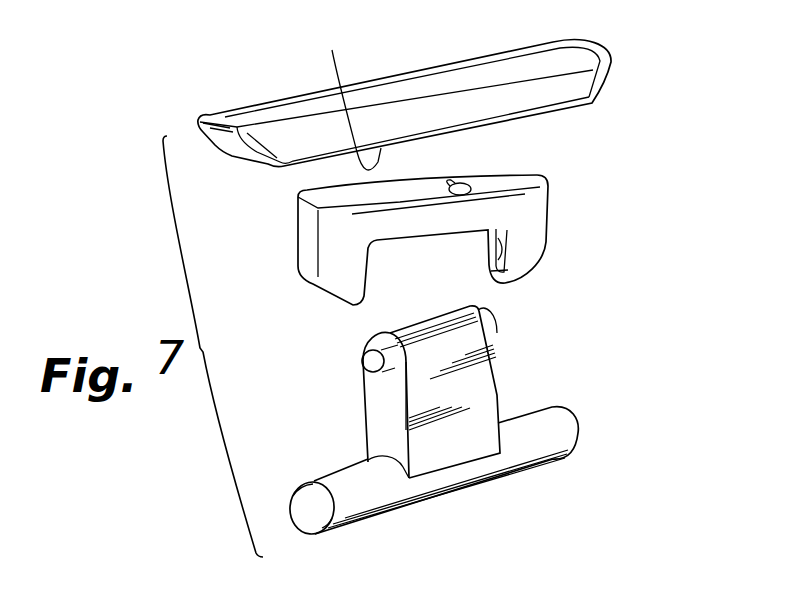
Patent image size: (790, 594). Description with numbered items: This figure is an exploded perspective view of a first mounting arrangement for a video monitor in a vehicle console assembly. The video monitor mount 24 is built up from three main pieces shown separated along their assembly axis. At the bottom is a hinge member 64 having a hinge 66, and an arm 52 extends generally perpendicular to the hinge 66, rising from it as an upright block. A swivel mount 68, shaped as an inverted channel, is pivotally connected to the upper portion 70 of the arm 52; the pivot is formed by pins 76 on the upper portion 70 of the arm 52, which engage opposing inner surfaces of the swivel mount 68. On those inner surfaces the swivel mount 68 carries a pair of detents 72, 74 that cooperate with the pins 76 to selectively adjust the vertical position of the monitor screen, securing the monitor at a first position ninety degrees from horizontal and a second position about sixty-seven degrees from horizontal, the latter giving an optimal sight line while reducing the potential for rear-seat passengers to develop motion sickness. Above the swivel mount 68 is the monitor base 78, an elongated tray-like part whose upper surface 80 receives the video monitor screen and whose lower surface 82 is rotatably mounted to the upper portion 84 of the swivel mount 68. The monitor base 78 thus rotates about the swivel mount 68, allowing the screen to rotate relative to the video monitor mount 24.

The video monitor mount 24 is at (159, 240).
The arm 52 is at (450, 452).
The hinge member 64 is at (581, 428).
The hinge 66 is at (363, 505).
The swivel mount 68 is at (550, 199).
The upper portion of arm 70 is at (480, 387).
The detent 72 is at (508, 247).
The detent 74 is at (514, 270).
The pins 76 is at (362, 362).
The monitor base 78 is at (614, 70).
The upper surface 80 is at (470, 70).
The lower surface 82 is at (352, 97).
The upper portion of swivel mount 84 is at (466, 188).